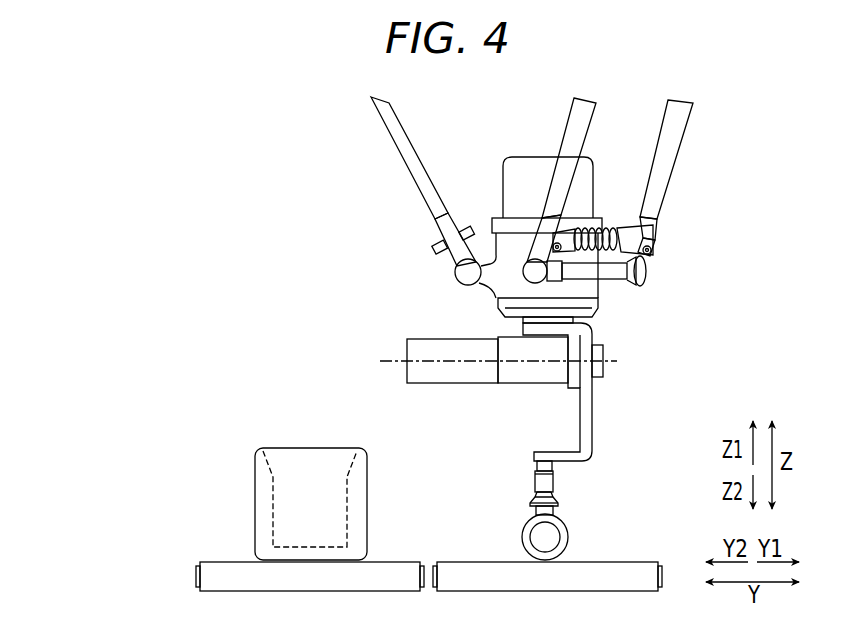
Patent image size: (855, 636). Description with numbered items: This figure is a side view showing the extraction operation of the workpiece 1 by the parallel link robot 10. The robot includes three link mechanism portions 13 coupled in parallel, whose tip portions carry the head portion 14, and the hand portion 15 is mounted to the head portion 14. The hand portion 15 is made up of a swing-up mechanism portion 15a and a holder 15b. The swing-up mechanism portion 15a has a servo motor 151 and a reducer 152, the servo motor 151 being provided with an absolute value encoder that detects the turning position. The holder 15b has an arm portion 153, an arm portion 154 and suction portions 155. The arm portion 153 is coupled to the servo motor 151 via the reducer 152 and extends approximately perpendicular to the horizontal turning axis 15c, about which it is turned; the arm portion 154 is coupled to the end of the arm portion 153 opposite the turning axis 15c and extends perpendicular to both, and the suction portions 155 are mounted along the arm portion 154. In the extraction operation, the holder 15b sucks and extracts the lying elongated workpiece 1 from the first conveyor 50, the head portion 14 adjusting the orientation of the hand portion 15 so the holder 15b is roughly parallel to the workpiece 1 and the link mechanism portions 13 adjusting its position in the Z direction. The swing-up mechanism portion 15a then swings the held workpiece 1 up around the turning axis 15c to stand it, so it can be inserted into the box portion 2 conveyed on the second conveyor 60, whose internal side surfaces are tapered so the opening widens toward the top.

The workpiece 1 is at (521, 527).
The box portion 2 is at (255, 470).
The parallel link robot 10 is at (714, 140).
The link mechanism portion 13 is at (354, 152).
The head portion 14 is at (513, 157).
The hand portion 15 is at (659, 388).
The swing-up mechanism portion 15a is at (386, 347).
The holder 15b is at (613, 446).
The turning axis 15c is at (614, 360).
The servo motor 151 is at (418, 338).
The reducer 152 is at (500, 336).
The arm portion 153 is at (592, 410).
The arm portion 154 is at (558, 451).
The suction portion 155 is at (555, 481).
The first conveyor 50 is at (630, 561).
The second conveyor 60 is at (403, 561).